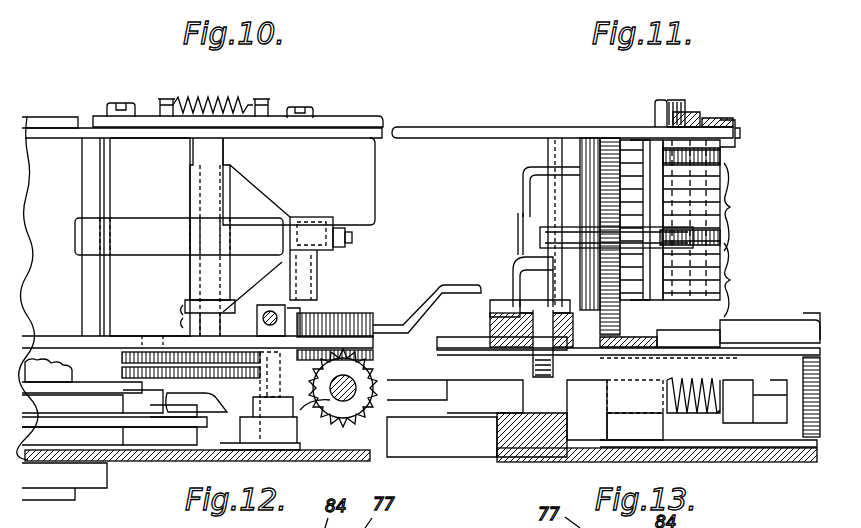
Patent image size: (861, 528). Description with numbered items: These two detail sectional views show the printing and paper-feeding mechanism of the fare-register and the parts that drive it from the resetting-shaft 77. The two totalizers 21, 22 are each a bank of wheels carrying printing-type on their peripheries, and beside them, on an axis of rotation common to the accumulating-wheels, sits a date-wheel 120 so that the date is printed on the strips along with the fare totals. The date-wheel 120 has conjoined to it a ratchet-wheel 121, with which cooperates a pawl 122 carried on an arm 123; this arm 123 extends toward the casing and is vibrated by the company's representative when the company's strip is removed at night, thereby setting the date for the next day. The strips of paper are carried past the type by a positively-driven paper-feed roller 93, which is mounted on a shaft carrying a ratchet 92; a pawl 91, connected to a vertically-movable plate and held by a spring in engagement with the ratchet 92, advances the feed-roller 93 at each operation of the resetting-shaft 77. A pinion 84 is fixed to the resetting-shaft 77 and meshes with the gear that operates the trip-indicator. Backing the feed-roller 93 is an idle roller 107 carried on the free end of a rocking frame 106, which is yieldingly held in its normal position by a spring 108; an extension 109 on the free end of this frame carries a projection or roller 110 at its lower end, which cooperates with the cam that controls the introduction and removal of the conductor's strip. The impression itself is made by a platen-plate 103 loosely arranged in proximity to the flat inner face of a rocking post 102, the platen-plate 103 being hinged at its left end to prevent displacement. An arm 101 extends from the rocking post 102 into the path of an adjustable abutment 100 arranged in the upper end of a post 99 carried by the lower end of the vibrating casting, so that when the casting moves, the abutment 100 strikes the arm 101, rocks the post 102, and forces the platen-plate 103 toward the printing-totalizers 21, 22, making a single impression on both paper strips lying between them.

In FIG. 11, the totalizer 21 is at (691, 220).
In FIG. 11, the totalizer 22 is at (741, 280).
In FIG. 10, the resetting-shaft 77 is at (352, 383).
In FIG. 11, the resetting-shaft 77 is at (577, 393).
In FIG. 10, the pinion 84 is at (333, 423).
In FIG. 11, the pinion 84 is at (810, 400).
In FIG. 11, the pawl 91 is at (768, 315).
In FIG. 11, the ratchet 92 is at (660, 320).
In FIG. 11, the paper-feed roller 93 is at (717, 237).
In FIG. 10, the post 99 is at (273, 372).
In FIG. 10, the adjustable abutment 100 is at (270, 311).
In FIG. 10, the arm 101 is at (256, 320).
In FIG. 10, the rocking post 102 is at (150, 237).
In FIG. 10, the platen-plate 103 is at (299, 181).
In FIG. 11, the platen-plate 103 is at (593, 173).
In FIG. 10, the rocking frame 106 is at (236, 237).
In FIG. 11, the rocking frame 106 is at (527, 190).
In FIG. 10, the idle roller 107 is at (352, 237).
In FIG. 11, the idle roller 107 is at (567, 237).
In FIG. 10, the spring 108 is at (179, 236).
In FIG. 10, the extension 109 is at (307, 273).
In FIG. 11, the extension 109 is at (509, 295).
In FIG. 10, the projection or roller 110 is at (305, 322).
In FIG. 11, the projection or roller 110 is at (490, 308).
In FIG. 11, the date-wheel 120 is at (718, 157).
In FIG. 11, the ratchet-wheel 121 is at (637, 150).
In FIG. 11, the pawl 122 is at (735, 133).
In FIG. 11, the arm 123 is at (703, 120).